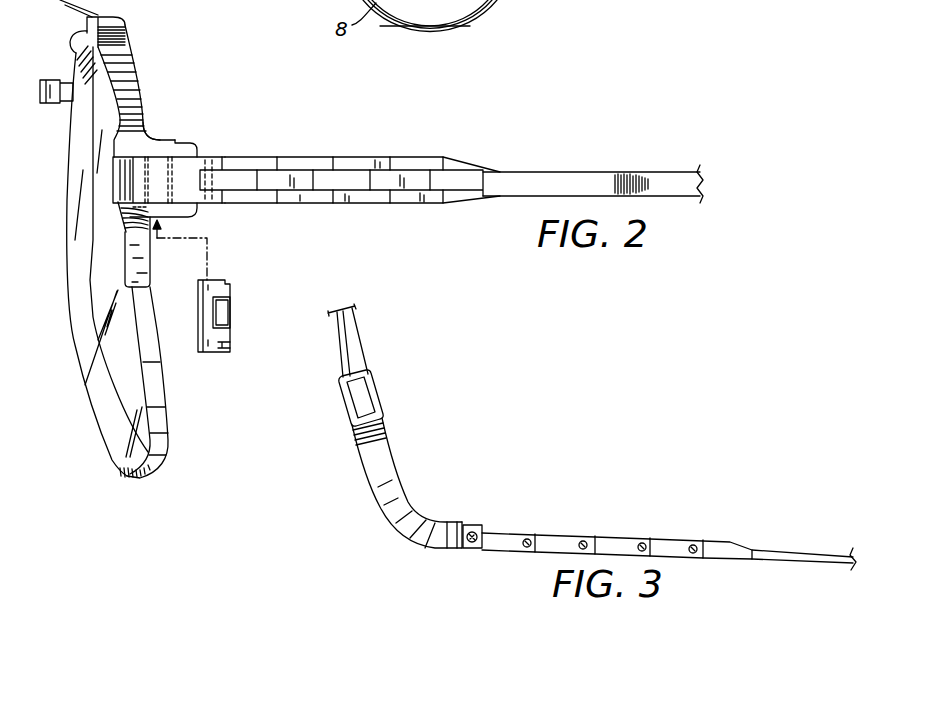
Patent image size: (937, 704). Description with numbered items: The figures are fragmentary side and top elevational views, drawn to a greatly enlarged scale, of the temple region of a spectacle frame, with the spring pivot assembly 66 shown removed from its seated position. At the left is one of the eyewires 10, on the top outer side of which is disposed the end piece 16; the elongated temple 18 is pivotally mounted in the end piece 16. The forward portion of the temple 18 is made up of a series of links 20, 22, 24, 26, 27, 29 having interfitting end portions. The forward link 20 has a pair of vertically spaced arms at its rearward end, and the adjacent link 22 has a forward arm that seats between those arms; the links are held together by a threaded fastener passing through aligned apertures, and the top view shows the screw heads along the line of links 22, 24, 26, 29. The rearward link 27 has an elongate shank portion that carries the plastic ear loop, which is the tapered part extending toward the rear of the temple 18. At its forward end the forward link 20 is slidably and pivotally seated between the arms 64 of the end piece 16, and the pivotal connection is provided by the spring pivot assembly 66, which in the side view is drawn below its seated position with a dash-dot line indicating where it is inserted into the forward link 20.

In FIG. 2, the eyewires 10 is at (165, 458).
In FIG. 2, the end pieces 16 is at (143, 108).
In FIG. 2, the temples 18 is at (615, 172).
In FIG. 3, the temples 18 is at (797, 545).
In FIG. 2, the forward link 20 is at (183, 187).
In FIG. 3, the forward link 20 is at (483, 533).
In FIG. 2, the adjacent link 22 is at (242, 157).
In FIG. 3, the adjacent link 22 is at (512, 535).
In FIG. 2, the link 24 is at (298, 157).
In FIG. 3, the link 24 is at (576, 538).
In FIG. 2, the link 26 is at (356, 156).
In FIG. 3, the link 26 is at (632, 540).
In FIG. 2, the rearward link 27 is at (462, 162).
In FIG. 3, the rearward link 27 is at (730, 542).
In FIG. 2, the link 29 is at (415, 156).
In FIG. 3, the link 29 is at (682, 542).
In FIG. 2, the arms of the end piece 64 is at (185, 148).
In FIG. 2, the spring pivot assembly 66 is at (210, 353).